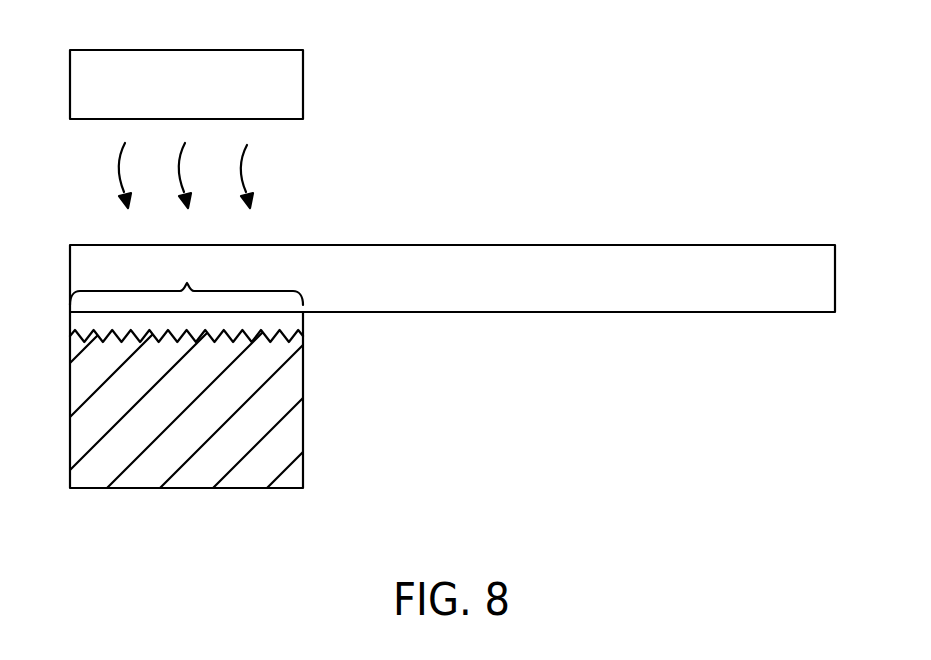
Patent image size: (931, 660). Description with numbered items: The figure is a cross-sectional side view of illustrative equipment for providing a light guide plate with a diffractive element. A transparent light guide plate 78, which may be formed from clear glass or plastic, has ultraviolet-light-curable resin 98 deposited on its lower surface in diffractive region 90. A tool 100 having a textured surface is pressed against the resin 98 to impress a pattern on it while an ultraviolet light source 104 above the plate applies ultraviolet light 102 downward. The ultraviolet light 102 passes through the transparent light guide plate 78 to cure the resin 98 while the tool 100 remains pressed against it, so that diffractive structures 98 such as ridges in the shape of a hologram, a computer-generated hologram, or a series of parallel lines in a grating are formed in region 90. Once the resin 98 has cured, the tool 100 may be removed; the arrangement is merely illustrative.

The light guide plate 78 is at (505, 245).
The diffractive region 90 is at (186, 280).
The ultraviolet-light-curable resin 98 is at (277, 332).
The tool 100 is at (303, 418).
The ultraviolet light 102 is at (118, 170).
The ultraviolet light source 104 is at (303, 85).